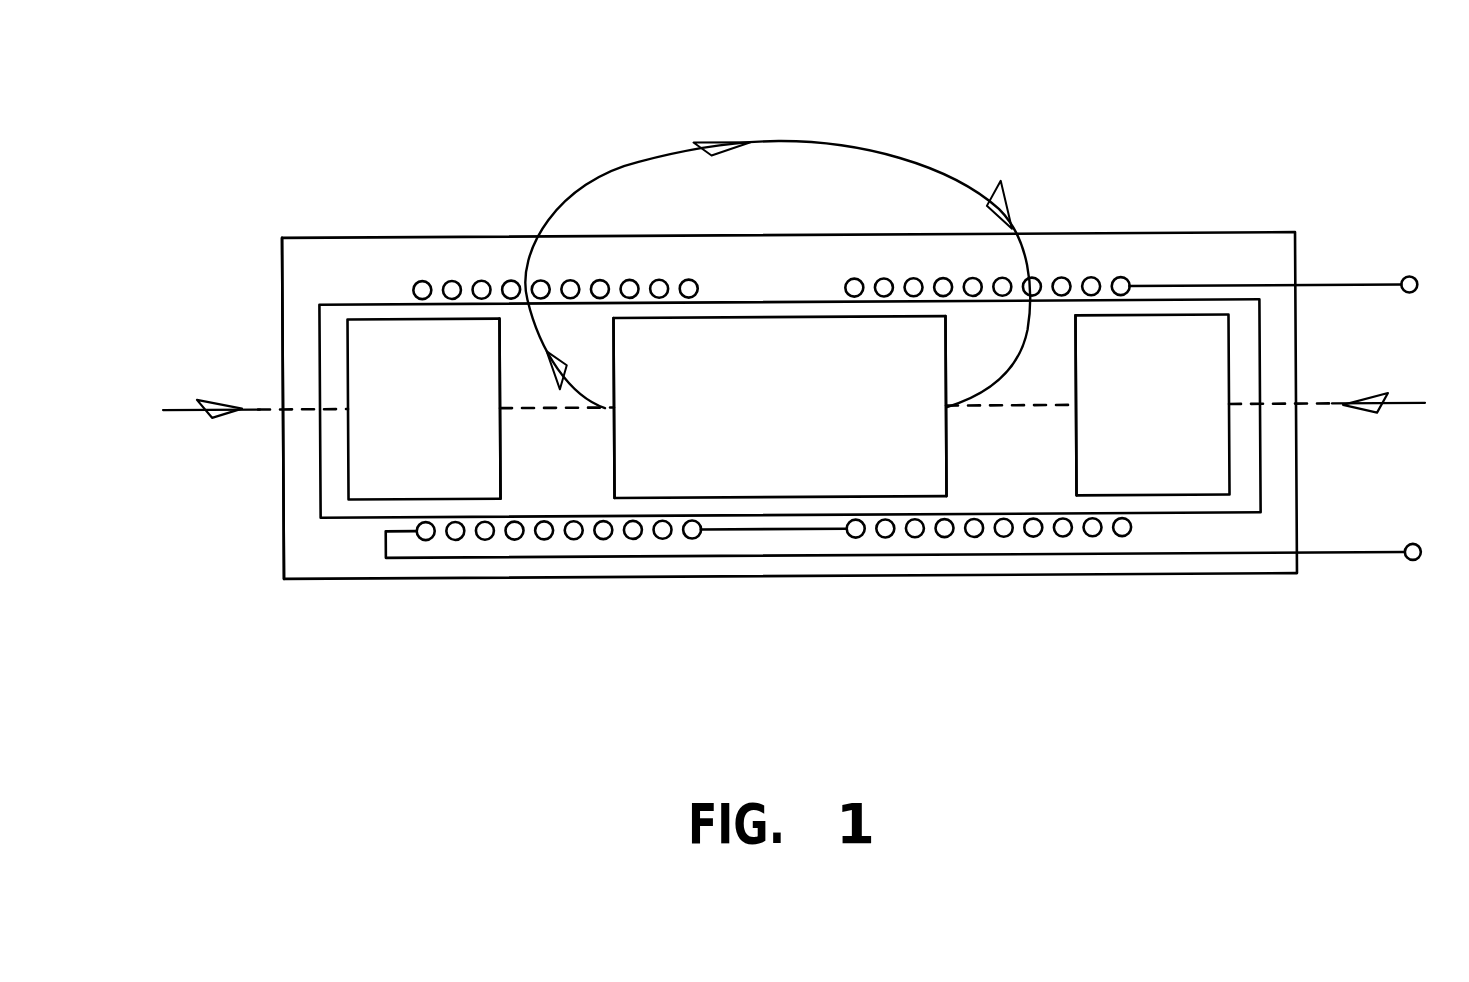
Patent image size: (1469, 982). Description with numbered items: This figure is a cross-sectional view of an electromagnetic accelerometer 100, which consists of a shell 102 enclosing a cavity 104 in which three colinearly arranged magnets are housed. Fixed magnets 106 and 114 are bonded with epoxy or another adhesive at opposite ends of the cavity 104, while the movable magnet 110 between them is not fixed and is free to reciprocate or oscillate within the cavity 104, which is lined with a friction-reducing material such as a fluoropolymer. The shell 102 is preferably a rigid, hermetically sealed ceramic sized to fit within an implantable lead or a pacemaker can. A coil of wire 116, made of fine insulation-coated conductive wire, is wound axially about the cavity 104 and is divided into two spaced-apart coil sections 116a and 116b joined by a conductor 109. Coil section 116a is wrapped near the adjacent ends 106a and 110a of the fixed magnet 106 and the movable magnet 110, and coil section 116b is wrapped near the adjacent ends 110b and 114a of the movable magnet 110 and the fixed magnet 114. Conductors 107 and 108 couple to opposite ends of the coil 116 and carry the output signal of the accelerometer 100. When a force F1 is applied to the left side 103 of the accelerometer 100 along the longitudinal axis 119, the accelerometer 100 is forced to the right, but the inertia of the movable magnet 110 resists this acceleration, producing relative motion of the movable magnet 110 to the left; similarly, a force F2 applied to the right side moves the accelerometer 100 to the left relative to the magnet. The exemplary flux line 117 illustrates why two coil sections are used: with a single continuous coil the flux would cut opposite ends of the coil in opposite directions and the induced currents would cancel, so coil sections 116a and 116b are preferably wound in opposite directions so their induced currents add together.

The electromagnetic accelerometer 100 is at (792, 357).
The shell 102 is at (345, 230).
The left side 103 is at (283, 520).
The cavity 104 is at (790, 305).
The fixed magnet 106 is at (423, 407).
The end of magnet 106 106a is at (510, 441).
The conductor 107 is at (1348, 287).
The conductor 108 is at (1353, 555).
The conductor 109 is at (1305, 258).
The movable magnet 110 is at (779, 406).
The end of magnet 110 110a is at (605, 461).
The end of magnet 110 110b is at (957, 474).
The fixed magnet 114 is at (1152, 403).
The end of magnet 114 114a is at (1065, 456).
The coil of wire 116 is at (785, 422).
The coil section 116a is at (490, 280).
The coil section 116b is at (1062, 278).
The flux line 117 is at (640, 161).
The longitudinal axis 119 is at (270, 412).
The force F1 is at (189, 410).
The force F2 is at (1400, 411).